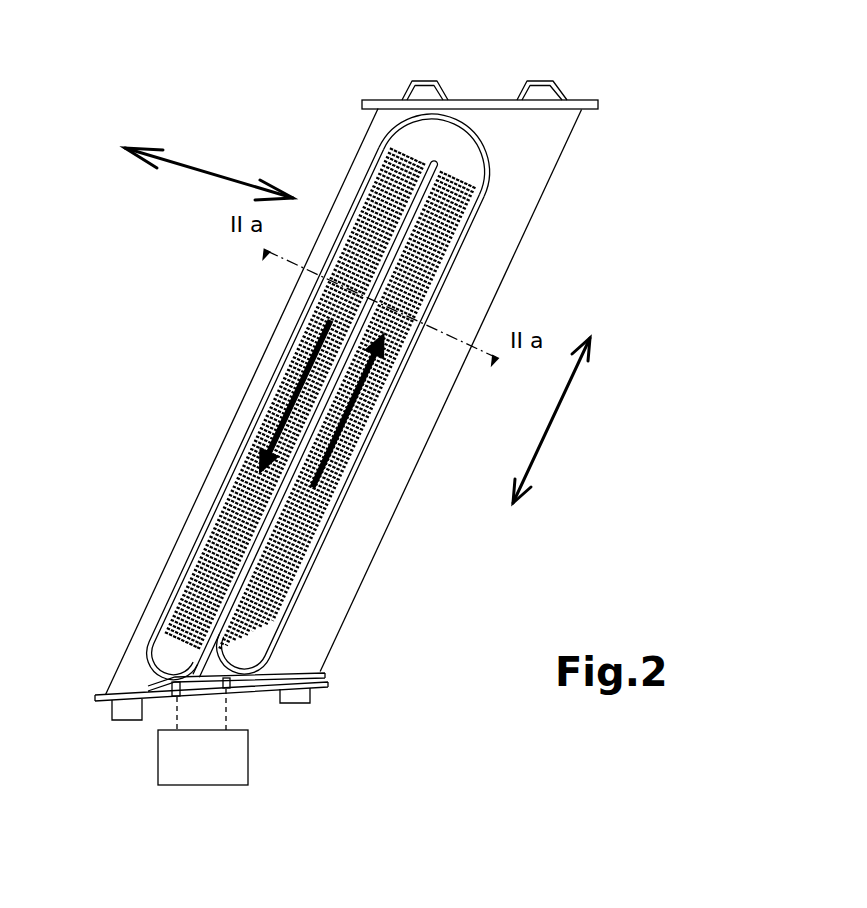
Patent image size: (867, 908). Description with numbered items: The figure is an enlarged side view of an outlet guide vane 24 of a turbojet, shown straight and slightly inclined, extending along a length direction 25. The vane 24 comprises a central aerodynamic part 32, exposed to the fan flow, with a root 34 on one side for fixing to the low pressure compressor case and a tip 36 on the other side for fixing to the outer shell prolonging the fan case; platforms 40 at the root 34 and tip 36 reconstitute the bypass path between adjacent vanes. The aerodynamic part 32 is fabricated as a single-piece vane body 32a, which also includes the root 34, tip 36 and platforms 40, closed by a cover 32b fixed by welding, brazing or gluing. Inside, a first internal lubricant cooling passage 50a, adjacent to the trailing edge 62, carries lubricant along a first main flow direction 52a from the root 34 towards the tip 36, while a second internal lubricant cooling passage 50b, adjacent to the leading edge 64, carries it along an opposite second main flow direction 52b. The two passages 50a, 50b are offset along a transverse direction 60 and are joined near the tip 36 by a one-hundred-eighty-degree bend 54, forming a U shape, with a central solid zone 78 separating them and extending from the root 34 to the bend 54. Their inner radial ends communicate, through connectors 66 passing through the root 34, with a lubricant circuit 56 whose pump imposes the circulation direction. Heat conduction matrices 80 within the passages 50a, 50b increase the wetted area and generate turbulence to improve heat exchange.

The outlet guide vane 24 is at (667, 248).
The length direction 25 is at (553, 428).
The aerodynamic part 32 is at (382, 402).
The vane body 32a is at (488, 228).
The cover 32b is at (396, 108).
The root 34 is at (314, 695).
The tip 36 is at (537, 97).
The platforms 40 is at (368, 109).
The first internal lubricant cooling passage 50a is at (304, 620).
The second internal lubricant cooling passage 50b is at (180, 571).
The first main flow direction 52a is at (352, 480).
The second main flow direction 52b is at (288, 402).
The bend 54 is at (462, 150).
The lubricant circuit 56 is at (227, 772).
The transverse direction 60 is at (207, 173).
The trailing edge 62 is at (538, 207).
The leading edge 64 is at (221, 455).
The connectors 66 is at (145, 695).
The central solid zone 78 is at (398, 244).
The heat conduction matrix 80 is at (222, 527).